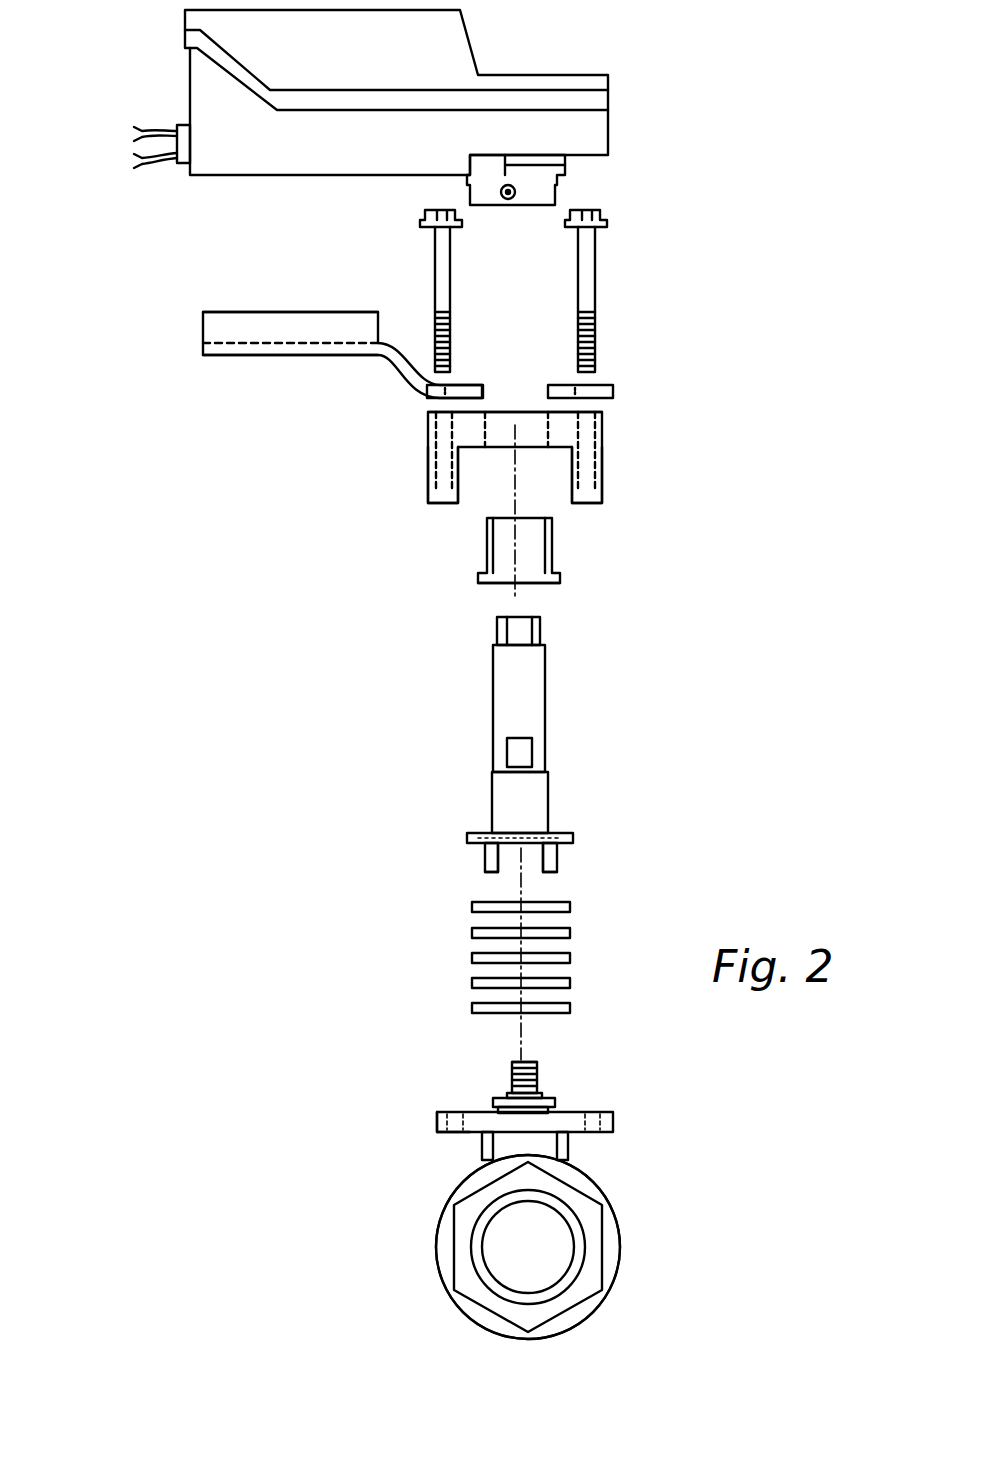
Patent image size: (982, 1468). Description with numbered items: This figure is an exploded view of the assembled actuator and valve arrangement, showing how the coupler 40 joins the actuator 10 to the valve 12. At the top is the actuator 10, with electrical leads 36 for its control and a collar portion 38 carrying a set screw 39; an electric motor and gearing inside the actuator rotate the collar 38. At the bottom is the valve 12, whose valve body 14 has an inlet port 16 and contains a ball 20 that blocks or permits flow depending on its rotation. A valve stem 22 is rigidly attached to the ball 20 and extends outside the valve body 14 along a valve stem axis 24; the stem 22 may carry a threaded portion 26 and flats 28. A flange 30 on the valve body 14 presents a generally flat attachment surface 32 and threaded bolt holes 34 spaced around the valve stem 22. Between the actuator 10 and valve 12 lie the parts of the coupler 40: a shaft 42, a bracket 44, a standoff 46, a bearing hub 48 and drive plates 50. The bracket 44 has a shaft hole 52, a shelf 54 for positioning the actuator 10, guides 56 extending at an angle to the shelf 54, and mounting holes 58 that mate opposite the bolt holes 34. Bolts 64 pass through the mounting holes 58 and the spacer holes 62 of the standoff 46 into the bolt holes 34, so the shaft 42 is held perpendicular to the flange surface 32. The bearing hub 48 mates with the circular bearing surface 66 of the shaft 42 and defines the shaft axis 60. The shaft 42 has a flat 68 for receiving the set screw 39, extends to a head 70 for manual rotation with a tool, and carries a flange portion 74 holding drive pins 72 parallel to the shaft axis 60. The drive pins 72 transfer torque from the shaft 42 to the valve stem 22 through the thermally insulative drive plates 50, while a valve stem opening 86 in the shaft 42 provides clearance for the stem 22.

The actuator 10 is at (160, 104).
The valve 12 is at (366, 1229).
The valve body 14 is at (575, 1173).
The inlet port 16 is at (583, 1210).
The ball 20 is at (580, 1257).
The valve stem 22 is at (535, 1065).
The valve stem axis 24 is at (545, 912).
The threaded portion 26 is at (512, 1068).
The flat 28 is at (545, 1090).
The flange 30 is at (612, 1120).
The attachment surface 32 is at (475, 1112).
The bolt hole 34 is at (458, 1125).
The electrical leads 36 is at (140, 147).
The collar portion 38 is at (545, 192).
The set screw 39 is at (500, 192).
The coupler 40 is at (750, 546).
The shaft 42 is at (457, 725).
The bracket 44 is at (188, 334).
The standoff 46 is at (412, 462).
The bearing hub 48 is at (450, 581).
The drive plates 50 is at (472, 1010).
The shaft hole 52 is at (532, 392).
The shelf 54 is at (270, 352).
The guides 56 is at (268, 318).
The mounting holes 58 is at (440, 396).
The shaft axis 60 is at (520, 590).
The spacer holes 62 is at (585, 458).
The bolts 64 is at (440, 262).
The circular bearing surface 66 is at (535, 787).
The flat 68 is at (522, 750).
The head 70 is at (520, 632).
The drive pins 72 is at (490, 858).
The flange portion 74 is at (477, 830).
The valve stem opening 86 is at (505, 868).